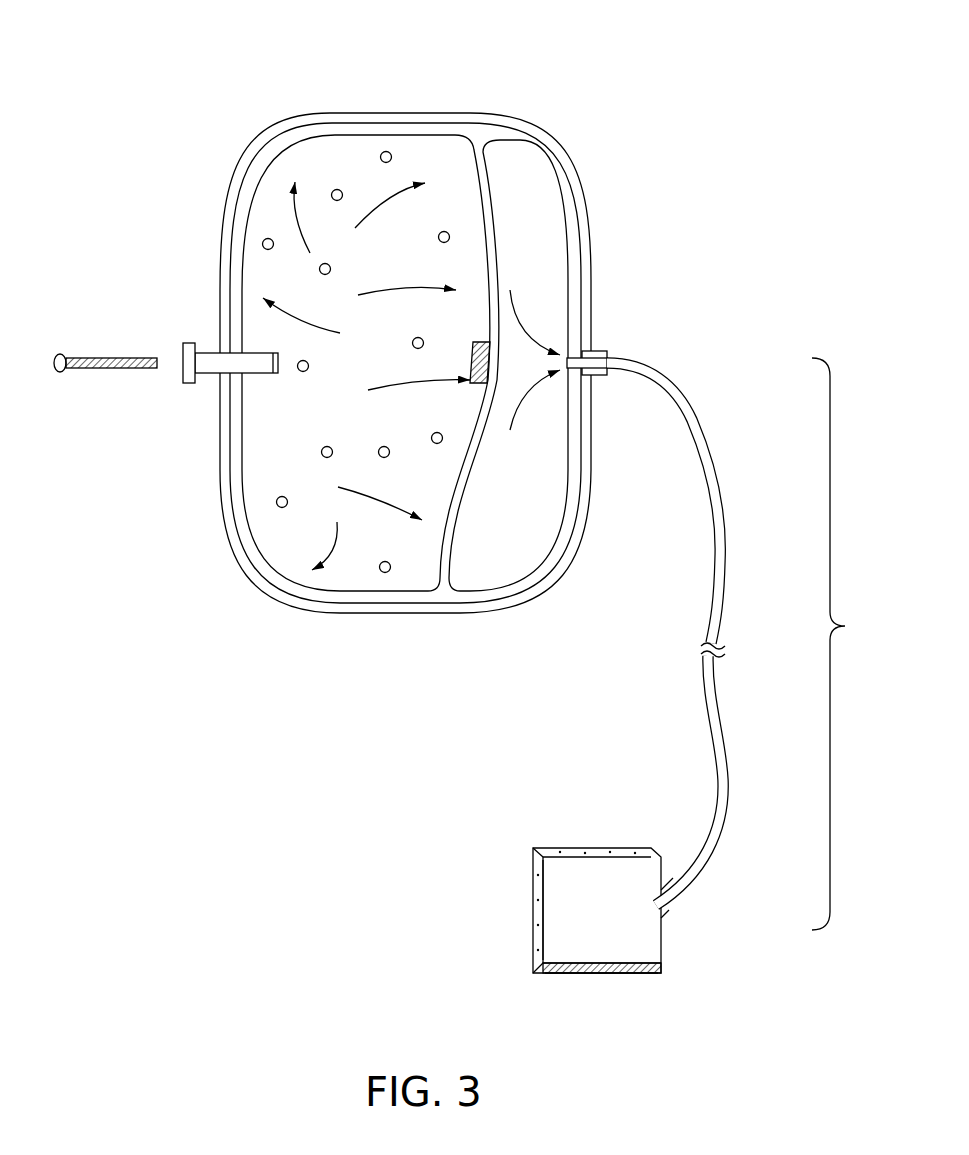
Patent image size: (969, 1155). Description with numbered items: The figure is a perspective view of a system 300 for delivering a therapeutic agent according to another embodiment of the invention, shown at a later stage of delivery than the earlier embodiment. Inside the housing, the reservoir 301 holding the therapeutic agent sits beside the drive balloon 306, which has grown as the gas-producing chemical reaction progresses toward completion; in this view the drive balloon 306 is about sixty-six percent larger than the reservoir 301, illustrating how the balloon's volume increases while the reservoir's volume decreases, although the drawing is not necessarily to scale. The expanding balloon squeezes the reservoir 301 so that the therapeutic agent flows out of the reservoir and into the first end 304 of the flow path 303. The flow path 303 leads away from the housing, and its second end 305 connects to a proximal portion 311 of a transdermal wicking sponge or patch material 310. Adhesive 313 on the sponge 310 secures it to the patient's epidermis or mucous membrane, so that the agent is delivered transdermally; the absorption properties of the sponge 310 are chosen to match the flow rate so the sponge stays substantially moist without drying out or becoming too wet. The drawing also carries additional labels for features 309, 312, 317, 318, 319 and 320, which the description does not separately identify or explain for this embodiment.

The system 300 is at (218, 50).
The reservoir 301 is at (548, 203).
The flow path 303 is at (681, 688).
The first end of the flow path 304 is at (660, 373).
The second end of the flow path 305 is at (685, 885).
The drive balloon 306 is at (486, 158).
The plug 309 is at (108, 358).
The transdermal wicking sponge or patch material 310 is at (645, 948).
The proximal portion 311 is at (669, 912).
The box side wall 312 is at (535, 920).
The adhesive 313 is at (572, 975).
The particles / bubbles 317 is at (383, 152).
The flow arrows 318 is at (333, 535).
The flow arrows into port 319 is at (520, 325).
The inlet port 320 is at (155, 380).